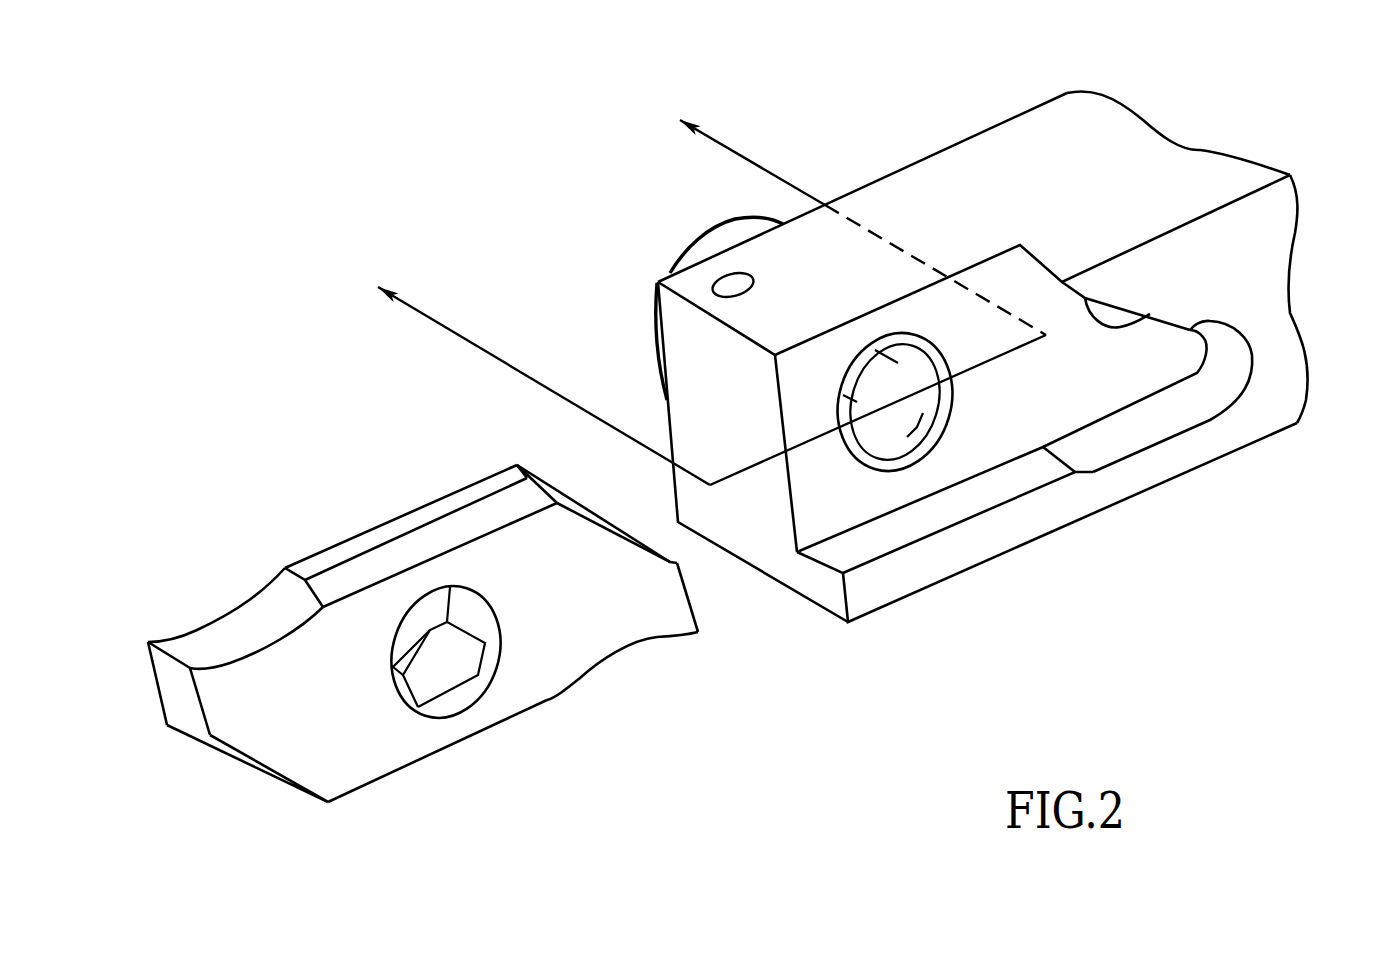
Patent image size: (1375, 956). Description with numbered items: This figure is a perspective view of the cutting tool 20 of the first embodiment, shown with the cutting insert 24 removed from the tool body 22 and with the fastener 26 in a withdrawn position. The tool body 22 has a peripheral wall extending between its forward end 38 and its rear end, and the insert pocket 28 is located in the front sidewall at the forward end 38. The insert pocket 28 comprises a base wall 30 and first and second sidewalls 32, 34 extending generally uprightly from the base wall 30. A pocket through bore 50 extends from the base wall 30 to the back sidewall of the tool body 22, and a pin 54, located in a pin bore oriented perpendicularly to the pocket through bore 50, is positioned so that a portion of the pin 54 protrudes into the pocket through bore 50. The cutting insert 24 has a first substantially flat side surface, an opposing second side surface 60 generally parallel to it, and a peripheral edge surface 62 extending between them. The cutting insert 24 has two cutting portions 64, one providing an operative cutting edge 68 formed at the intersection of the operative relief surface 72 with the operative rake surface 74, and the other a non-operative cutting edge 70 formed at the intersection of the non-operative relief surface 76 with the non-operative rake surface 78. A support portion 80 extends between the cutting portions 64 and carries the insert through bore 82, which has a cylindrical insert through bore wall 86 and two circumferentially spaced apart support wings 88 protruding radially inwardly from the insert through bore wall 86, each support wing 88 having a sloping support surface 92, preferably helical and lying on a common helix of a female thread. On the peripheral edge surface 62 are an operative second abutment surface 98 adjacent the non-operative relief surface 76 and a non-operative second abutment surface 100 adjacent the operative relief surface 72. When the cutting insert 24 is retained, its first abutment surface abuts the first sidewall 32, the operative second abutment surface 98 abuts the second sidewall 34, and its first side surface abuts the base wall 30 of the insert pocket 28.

The cutting tool 20 is at (250, 147).
The tool body 22 is at (898, 172).
The cutting insert 24 is at (248, 400).
The fastener 26 is at (717, 222).
The insert pocket 28 is at (857, 500).
The base wall 30 is at (1057, 390).
The first sidewall 32 is at (887, 537).
The second sidewall 34 is at (1147, 320).
The forward end 38 is at (697, 383).
The pocket through bore 50 is at (923, 433).
The pin 54 is at (723, 285).
The second side surface 60 is at (358, 738).
The peripheral edge surface 62 is at (368, 530).
The cutting portions 64 is at (145, 570).
The operative cutting edge 68 is at (163, 633).
The non-operative cutting edge 70 is at (698, 632).
The operative relief surface 72 is at (177, 692).
The operative rake surface 74 is at (217, 640).
The non-operative relief surface 76 is at (685, 587).
The non-operative rake surface 78 is at (630, 650).
The support portion 80 is at (373, 468).
The insert through bore 82 is at (485, 625).
The insert through bore wall 86 is at (462, 700).
The support wings 88 is at (470, 674).
The support surface 92 is at (433, 682).
The operative second abutment surface 98 is at (587, 507).
The non-operative second abutment surface 100 is at (237, 758).